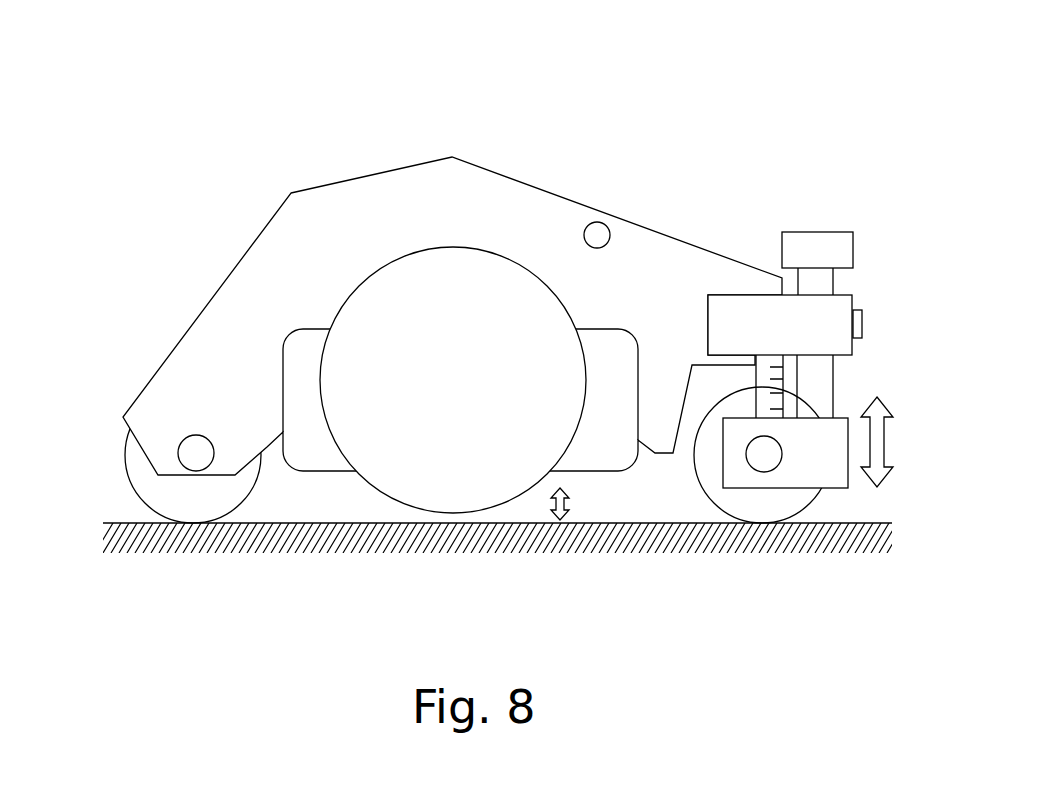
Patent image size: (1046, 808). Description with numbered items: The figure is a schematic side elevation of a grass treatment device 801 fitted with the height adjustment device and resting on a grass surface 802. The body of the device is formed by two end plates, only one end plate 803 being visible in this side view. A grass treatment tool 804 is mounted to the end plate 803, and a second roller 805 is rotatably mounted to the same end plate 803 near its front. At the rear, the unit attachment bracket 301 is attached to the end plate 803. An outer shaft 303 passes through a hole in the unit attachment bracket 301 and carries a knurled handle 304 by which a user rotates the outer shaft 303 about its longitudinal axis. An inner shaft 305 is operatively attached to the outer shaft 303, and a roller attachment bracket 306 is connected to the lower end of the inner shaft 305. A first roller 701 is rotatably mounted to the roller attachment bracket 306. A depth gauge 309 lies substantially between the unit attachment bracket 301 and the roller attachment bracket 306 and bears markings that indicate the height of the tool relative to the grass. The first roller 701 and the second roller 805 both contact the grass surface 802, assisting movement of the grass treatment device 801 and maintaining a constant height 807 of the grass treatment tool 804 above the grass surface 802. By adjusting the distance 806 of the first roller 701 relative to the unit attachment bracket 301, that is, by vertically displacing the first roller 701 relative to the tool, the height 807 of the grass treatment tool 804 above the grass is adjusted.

The grass treatment device 801 is at (252, 118).
The grass surface 802 is at (272, 523).
The end plate 803 is at (507, 178).
The grass treatment tool 804 is at (410, 273).
The second roller 805 is at (173, 497).
The distance 806 is at (878, 432).
The height 807 is at (567, 505).
The unit attachment bracket 301 is at (862, 322).
The outer shaft 303 is at (852, 278).
The handle 304 is at (853, 240).
The inner shaft 305 is at (778, 392).
The roller attachment bracket 306 is at (840, 456).
The depth gauge 309 is at (800, 402).
The first roller 701 is at (820, 497).